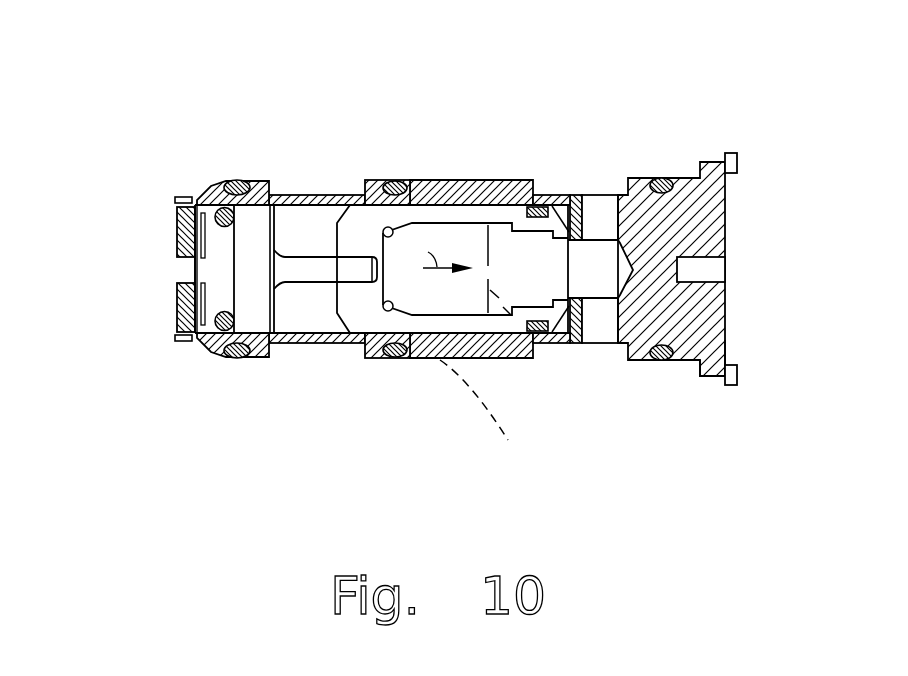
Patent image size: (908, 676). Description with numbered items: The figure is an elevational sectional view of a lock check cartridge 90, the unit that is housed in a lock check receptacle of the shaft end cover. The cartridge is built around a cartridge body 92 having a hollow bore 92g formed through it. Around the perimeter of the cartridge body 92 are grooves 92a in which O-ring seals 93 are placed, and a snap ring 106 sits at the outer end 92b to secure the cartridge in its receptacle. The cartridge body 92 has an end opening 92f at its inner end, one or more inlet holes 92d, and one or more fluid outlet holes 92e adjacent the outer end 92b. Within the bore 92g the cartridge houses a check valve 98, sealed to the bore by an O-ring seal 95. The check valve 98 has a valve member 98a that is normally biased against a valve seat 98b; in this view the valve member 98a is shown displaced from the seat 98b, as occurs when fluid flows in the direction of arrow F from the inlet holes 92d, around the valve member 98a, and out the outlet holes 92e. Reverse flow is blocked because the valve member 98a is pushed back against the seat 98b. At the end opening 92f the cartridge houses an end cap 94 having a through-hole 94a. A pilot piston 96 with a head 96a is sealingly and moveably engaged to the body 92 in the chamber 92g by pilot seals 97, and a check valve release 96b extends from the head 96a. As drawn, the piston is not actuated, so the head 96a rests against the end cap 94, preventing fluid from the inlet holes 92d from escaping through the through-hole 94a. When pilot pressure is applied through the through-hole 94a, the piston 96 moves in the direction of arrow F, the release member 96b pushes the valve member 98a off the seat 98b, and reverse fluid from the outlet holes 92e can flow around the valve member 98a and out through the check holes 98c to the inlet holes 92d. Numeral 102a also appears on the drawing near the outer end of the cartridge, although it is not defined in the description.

The lock check cartridge 90 is at (490, 95).
The cartridge body 92 is at (508, 176).
The grooves 92a is at (218, 182).
The outer end 92b is at (727, 338).
The inlet holes 92d is at (310, 190).
The fluid outlet holes 92e is at (605, 187).
The end opening 92f is at (173, 277).
The hollow bore 92g is at (312, 246).
The O-ring seals 93 is at (242, 183).
The end cap 94 is at (182, 222).
The through-hole 94a is at (182, 267).
The O-ring seal 95 is at (552, 187).
The pilot piston 96 is at (272, 333).
The head 96a is at (200, 295).
The check valve release 96b is at (318, 270).
The pilot seals 97 is at (210, 183).
The check valve 98 is at (447, 213).
The valve member 98a is at (528, 360).
The valve seat 98b is at (497, 420).
The check holes 98c is at (387, 335).
The end body 102a is at (680, 178).
The snap ring 106 is at (737, 160).